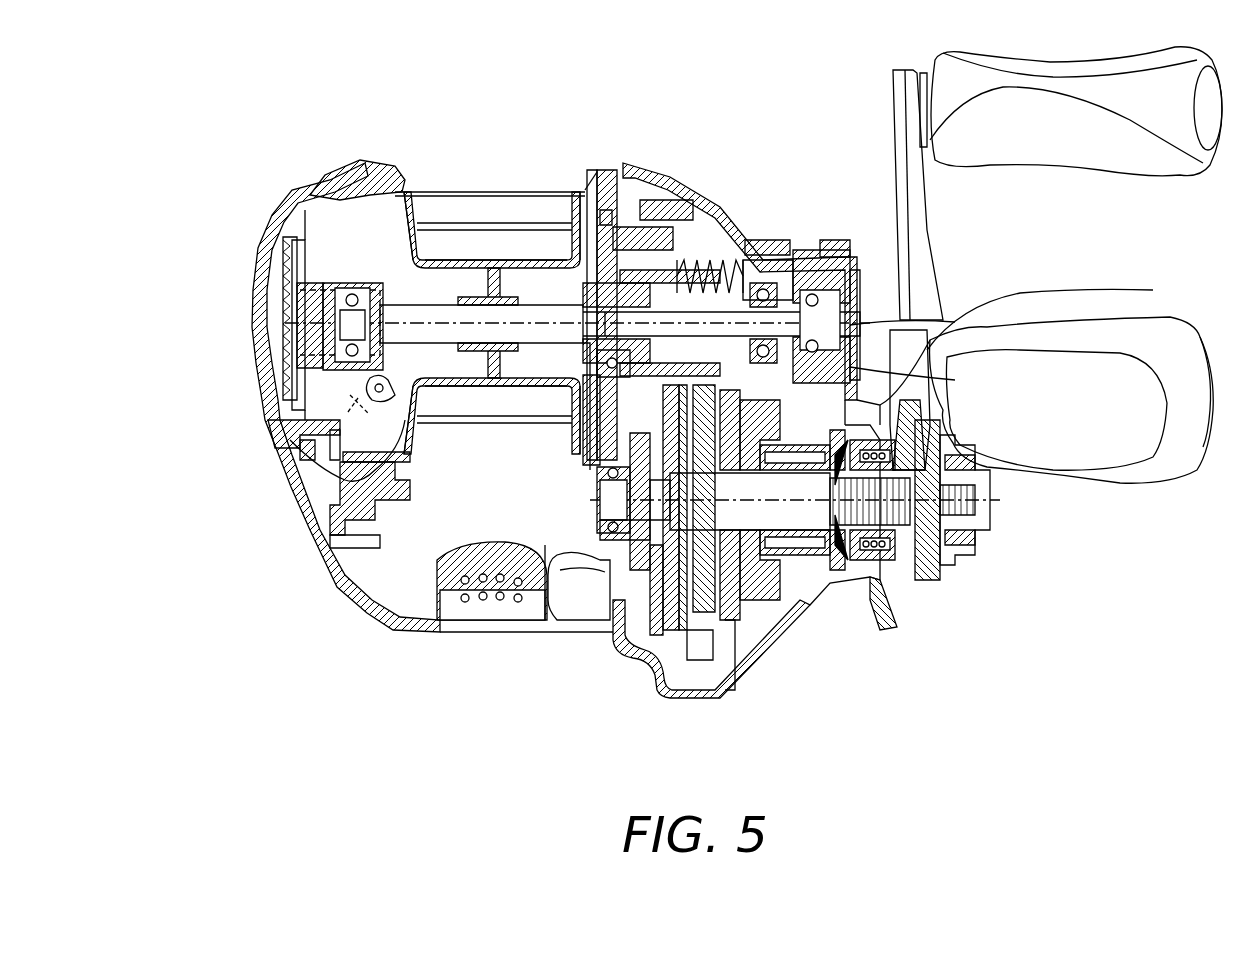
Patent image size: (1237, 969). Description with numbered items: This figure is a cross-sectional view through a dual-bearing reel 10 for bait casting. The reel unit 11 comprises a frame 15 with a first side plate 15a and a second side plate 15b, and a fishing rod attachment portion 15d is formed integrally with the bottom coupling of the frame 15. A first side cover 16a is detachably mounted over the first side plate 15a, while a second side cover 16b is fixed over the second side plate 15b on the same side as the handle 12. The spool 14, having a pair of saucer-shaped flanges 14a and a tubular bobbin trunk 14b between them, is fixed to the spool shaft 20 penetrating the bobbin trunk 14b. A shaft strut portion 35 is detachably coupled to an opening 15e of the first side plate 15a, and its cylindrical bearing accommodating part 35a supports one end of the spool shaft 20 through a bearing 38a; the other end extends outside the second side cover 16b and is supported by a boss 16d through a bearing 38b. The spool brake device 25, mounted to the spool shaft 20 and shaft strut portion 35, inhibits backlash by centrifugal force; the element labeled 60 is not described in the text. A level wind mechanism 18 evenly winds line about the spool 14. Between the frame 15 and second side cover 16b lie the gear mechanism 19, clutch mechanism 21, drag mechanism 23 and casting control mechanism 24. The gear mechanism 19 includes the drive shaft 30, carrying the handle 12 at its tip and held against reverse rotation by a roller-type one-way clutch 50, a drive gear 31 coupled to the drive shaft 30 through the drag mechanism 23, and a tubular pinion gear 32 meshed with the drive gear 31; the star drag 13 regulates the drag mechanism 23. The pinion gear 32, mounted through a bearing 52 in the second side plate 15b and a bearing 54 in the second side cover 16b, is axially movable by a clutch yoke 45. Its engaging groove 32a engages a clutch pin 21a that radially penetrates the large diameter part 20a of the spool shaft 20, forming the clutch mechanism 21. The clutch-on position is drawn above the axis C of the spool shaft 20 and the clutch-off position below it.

The dual-bearing reel 10 is at (240, 128).
The reel unit 11 is at (402, 155).
The handle 12 is at (968, 245).
The star drag 13 is at (878, 237).
The spool 14 is at (560, 230).
The flanges 14a is at (420, 195).
The bobbin trunk 14b is at (530, 265).
The frame 15 is at (615, 165).
The first side plate 15a is at (370, 164).
The second side plate 15b is at (642, 660).
The fishing rod attachment portion 15d is at (492, 612).
The opening 15e is at (330, 455).
The first side cover 16a is at (292, 298).
The second side cover 16b is at (790, 645).
The boss 16d is at (1153, 290).
The level wind mechanism 18 is at (572, 555).
The gear mechanism 19 is at (698, 672).
The spool shaft 20 is at (448, 295).
The large diameter part 20a is at (490, 368).
The clutch mechanism 21 is at (633, 275).
The clutch pin 21a is at (660, 292).
The drag mechanism 23 is at (748, 700).
The casting control mechanism 24 is at (803, 235).
The spool brake device 25 is at (312, 445).
The drive shaft 30 is at (905, 582).
The drive gear 31 is at (688, 655).
The pinion gear 32 is at (748, 250).
The engaging groove 32a is at (572, 395).
The shaft strut portion 35 is at (345, 318).
The bearing accommodating part 35a is at (268, 423).
The bearing 38a is at (345, 335).
The bearing 38b is at (795, 600).
The clutch yoke 45 is at (722, 255).
The roller-type one-way clutch 50 is at (740, 640).
The bearing 52 is at (712, 270).
The bearing 54 is at (768, 262).
The centrifugal brake mechanism 60 is at (275, 270).
The axis C is at (371, 325).